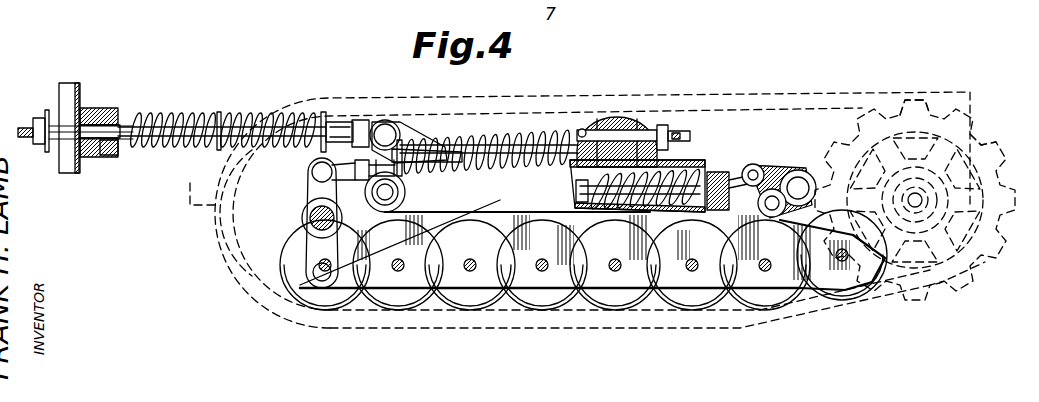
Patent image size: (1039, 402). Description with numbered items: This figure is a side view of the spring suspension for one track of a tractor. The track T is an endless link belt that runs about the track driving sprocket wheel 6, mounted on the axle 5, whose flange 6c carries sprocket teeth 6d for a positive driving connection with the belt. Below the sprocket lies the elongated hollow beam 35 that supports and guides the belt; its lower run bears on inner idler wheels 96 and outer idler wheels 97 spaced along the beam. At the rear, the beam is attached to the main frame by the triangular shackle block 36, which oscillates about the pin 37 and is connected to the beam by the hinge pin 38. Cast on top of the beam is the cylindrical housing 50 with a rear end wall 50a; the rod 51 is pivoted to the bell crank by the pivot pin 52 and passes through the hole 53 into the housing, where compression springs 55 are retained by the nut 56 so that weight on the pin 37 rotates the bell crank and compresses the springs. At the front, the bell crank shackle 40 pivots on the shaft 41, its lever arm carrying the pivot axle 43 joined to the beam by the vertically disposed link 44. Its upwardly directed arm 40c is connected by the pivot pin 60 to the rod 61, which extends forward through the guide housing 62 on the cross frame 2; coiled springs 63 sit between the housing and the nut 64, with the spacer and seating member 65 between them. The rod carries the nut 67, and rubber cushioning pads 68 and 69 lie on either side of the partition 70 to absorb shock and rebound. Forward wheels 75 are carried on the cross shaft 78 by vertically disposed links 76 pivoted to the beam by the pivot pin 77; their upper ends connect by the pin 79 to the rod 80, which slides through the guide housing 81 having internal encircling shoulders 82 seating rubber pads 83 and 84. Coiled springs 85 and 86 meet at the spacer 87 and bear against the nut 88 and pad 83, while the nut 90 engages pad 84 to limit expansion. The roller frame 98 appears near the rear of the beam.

The cross frame 2 is at (60, 92).
The axle 5 is at (920, 205).
The track driving sprocket wheel 6 is at (990, 185).
The wheel flange 6c is at (978, 158).
The sprocket teeth 6d is at (918, 106).
The hollow beam 35 is at (745, 270).
The triangular shackle block 36 is at (790, 172).
The pin 37 is at (800, 186).
The hinge pin 38 is at (772, 218).
The bell crank shackle 40 is at (428, 143).
The upwardly directed arm 40c is at (355, 125).
The transversely supported shaft 41 is at (384, 206).
The pivot axle 43 is at (465, 199).
The vertically disposed link 44 is at (465, 211).
The cylindrical housing 50 is at (688, 215).
The rear end wall 50a is at (710, 165).
The rod 51 is at (718, 212).
The pivot pin 52 is at (755, 168).
The hole 53 is at (712, 178).
The compression springs 55 is at (600, 215).
The nut 56 is at (578, 198).
The pivot pin 60 is at (386, 124).
The rod 61 is at (335, 120).
The guide housing 62 is at (110, 107).
The coiled springs 63 is at (165, 113).
The nut 64 is at (322, 115).
The spacer and seating member 65 is at (218, 118).
The nut 67 is at (40, 150).
The rubber cushioning pad 68 is at (92, 160).
The rubber cushioning pad 69 is at (108, 152).
The partition 70 is at (100, 160).
The paired wheels 75 is at (243, 292).
The vertically disposed links 76 is at (312, 245).
The pivot pin 77 is at (318, 278).
The cross shaft 78 is at (318, 222).
The pin 79 is at (317, 174).
The rod 80 is at (348, 176).
The guide housing 81 is at (643, 128).
The internal encircling shoulders 82 is at (630, 128).
The rubber pad 83 is at (600, 128).
The rubber pad 84 is at (668, 145).
The coiled spring 85 is at (470, 150).
The coiled spring 86 is at (547, 138).
The spacer 87 is at (500, 140).
The nut 88 is at (410, 152).
The nut 90 is at (692, 148).
The idler wheels 96 is at (427, 300).
The idler wheels 97 is at (470, 300).
The roller frame 98 is at (395, 300).
The track T is at (637, 330).